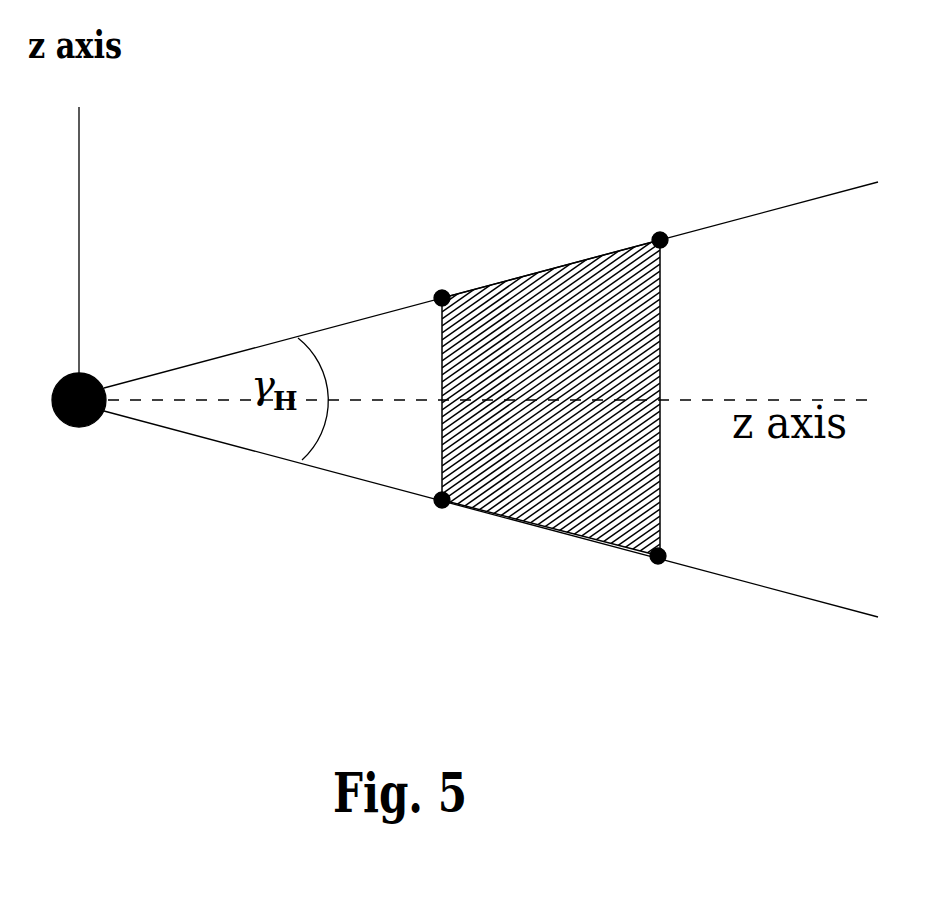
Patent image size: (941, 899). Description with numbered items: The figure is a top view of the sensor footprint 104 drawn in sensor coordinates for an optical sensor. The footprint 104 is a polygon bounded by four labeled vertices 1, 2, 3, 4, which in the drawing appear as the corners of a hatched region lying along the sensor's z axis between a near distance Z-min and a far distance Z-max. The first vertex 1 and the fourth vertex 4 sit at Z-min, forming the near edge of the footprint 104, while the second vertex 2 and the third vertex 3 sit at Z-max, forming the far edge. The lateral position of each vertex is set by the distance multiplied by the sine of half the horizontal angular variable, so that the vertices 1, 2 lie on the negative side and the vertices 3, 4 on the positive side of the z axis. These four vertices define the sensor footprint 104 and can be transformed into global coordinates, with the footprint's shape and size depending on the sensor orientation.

The sensor footprint 104 is at (490, 284).
The first vertex 1 is at (442, 525).
The second vertex 2 is at (658, 577).
The third vertex 3 is at (659, 222).
The fourth vertex 4 is at (440, 277).